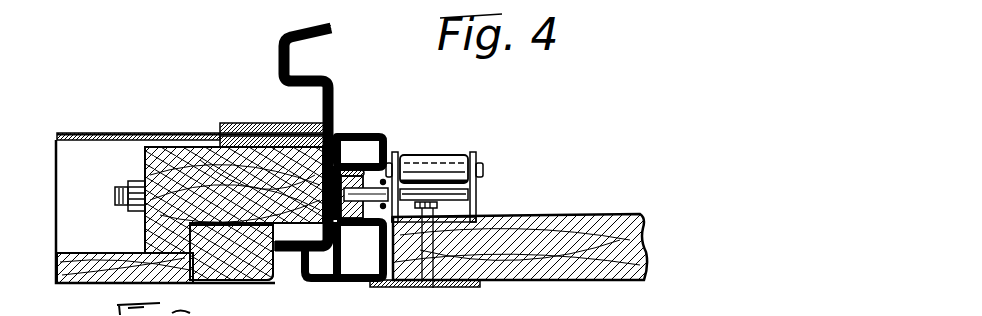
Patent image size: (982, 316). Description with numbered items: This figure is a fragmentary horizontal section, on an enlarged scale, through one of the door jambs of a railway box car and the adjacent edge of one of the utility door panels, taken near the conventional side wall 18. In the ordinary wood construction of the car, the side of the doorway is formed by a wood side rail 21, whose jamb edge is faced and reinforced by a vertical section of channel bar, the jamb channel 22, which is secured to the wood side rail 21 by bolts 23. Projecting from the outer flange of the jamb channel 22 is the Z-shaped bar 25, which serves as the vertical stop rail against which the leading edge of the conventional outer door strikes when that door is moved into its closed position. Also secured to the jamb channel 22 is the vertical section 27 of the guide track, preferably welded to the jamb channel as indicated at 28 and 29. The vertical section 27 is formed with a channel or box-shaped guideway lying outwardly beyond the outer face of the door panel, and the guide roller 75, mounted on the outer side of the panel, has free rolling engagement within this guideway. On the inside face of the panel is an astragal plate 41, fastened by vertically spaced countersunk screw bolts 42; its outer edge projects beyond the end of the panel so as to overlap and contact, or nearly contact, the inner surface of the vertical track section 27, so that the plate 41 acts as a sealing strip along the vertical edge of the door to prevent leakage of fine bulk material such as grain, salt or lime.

The side wall 18 is at (64, 268).
The wood side rail 21 is at (145, 160).
The jamb channel 22 is at (267, 132).
The bolts 23 is at (121, 207).
The Z-shaped bar 25 is at (278, 57).
The vertical section of guide track 27 is at (395, 118).
The weld 28 is at (337, 133).
The weld 29 is at (296, 262).
The astragal plate 41 is at (399, 285).
The screw bolts 42 is at (435, 288).
The guide roller 75 is at (355, 223).